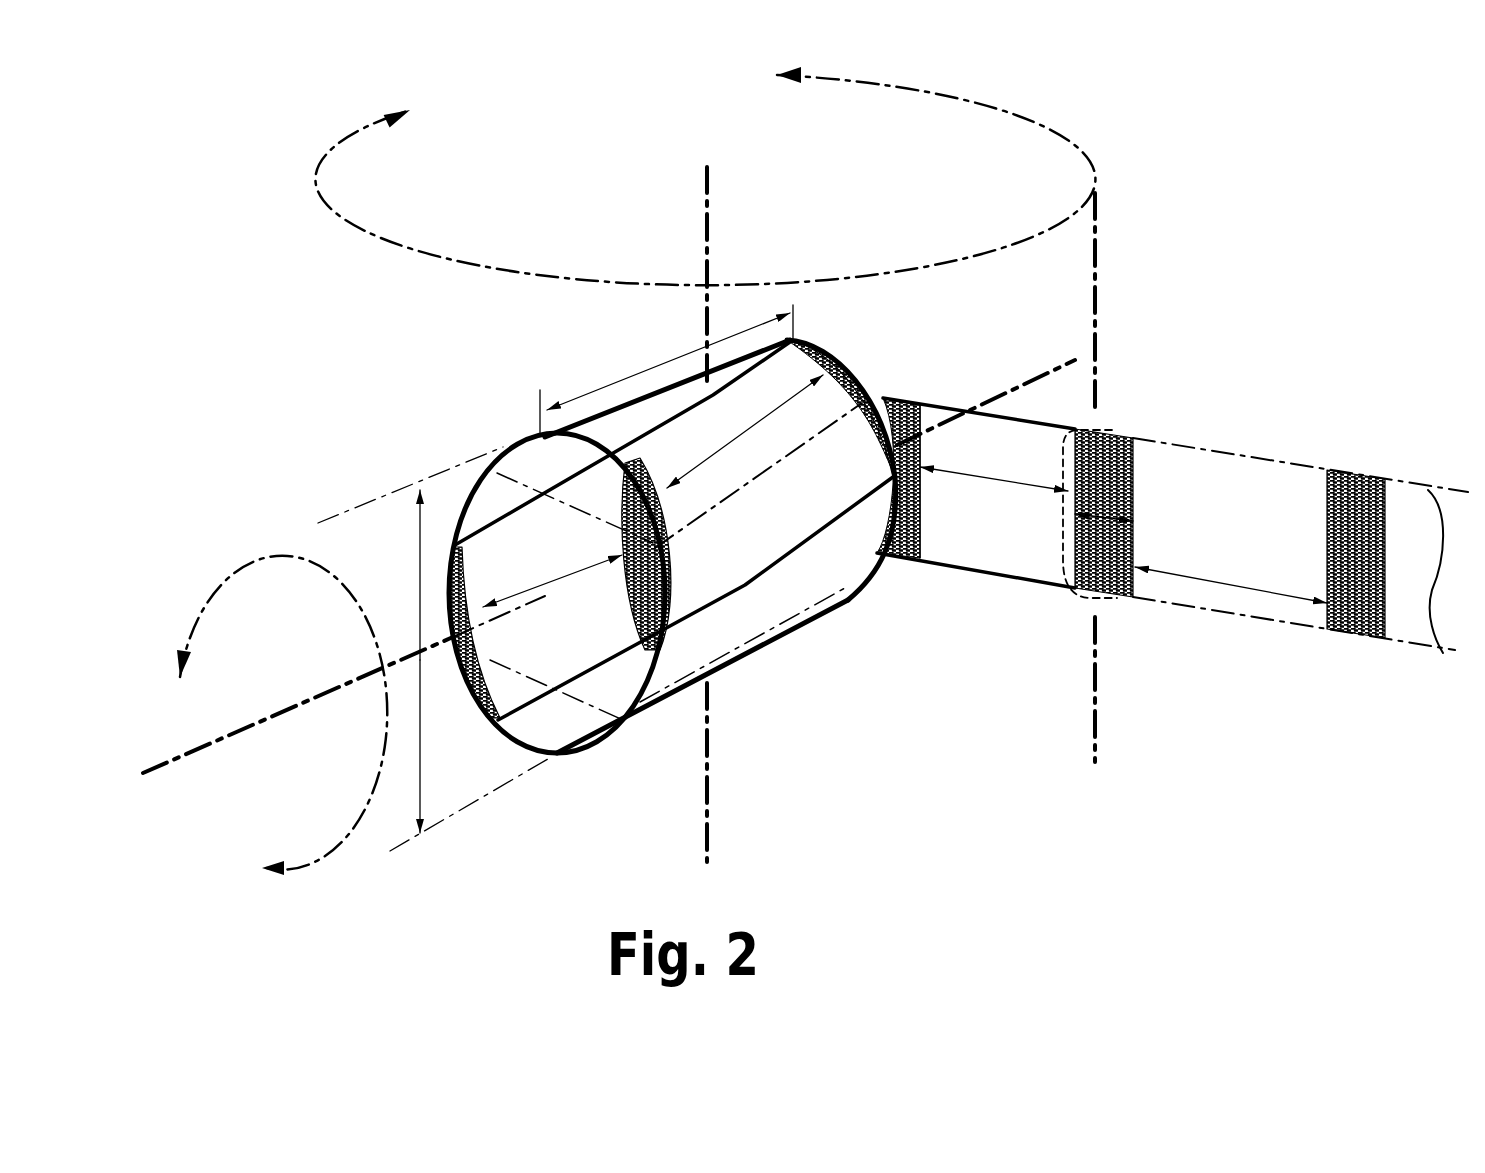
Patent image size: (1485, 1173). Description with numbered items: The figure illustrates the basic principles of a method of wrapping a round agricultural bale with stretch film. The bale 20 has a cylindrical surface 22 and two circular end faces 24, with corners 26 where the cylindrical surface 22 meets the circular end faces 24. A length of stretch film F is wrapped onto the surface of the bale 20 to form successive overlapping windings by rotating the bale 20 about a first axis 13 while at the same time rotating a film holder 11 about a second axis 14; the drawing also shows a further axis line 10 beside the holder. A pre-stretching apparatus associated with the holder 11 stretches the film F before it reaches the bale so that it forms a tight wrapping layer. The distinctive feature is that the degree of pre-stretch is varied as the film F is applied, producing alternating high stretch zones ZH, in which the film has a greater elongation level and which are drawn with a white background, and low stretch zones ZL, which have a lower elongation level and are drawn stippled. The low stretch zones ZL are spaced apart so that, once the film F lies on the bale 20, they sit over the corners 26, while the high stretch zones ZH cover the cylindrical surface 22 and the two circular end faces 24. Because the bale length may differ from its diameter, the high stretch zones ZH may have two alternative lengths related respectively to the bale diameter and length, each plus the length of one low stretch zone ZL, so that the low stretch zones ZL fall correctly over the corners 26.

The vertical axis 10 is at (1097, 305).
The film holder 11 is at (1060, 558).
The first axis 13 is at (313, 702).
The second axis 14 is at (712, 210).
The bale 20 is at (827, 613).
The cylindrical surface 22 is at (725, 627).
The circular end faces 24 is at (552, 720).
The corners 26 is at (650, 680).
The stretch film F is at (1237, 475).
The high stretch zones ZH is at (990, 532).
The low stretch zones ZL is at (1108, 575).